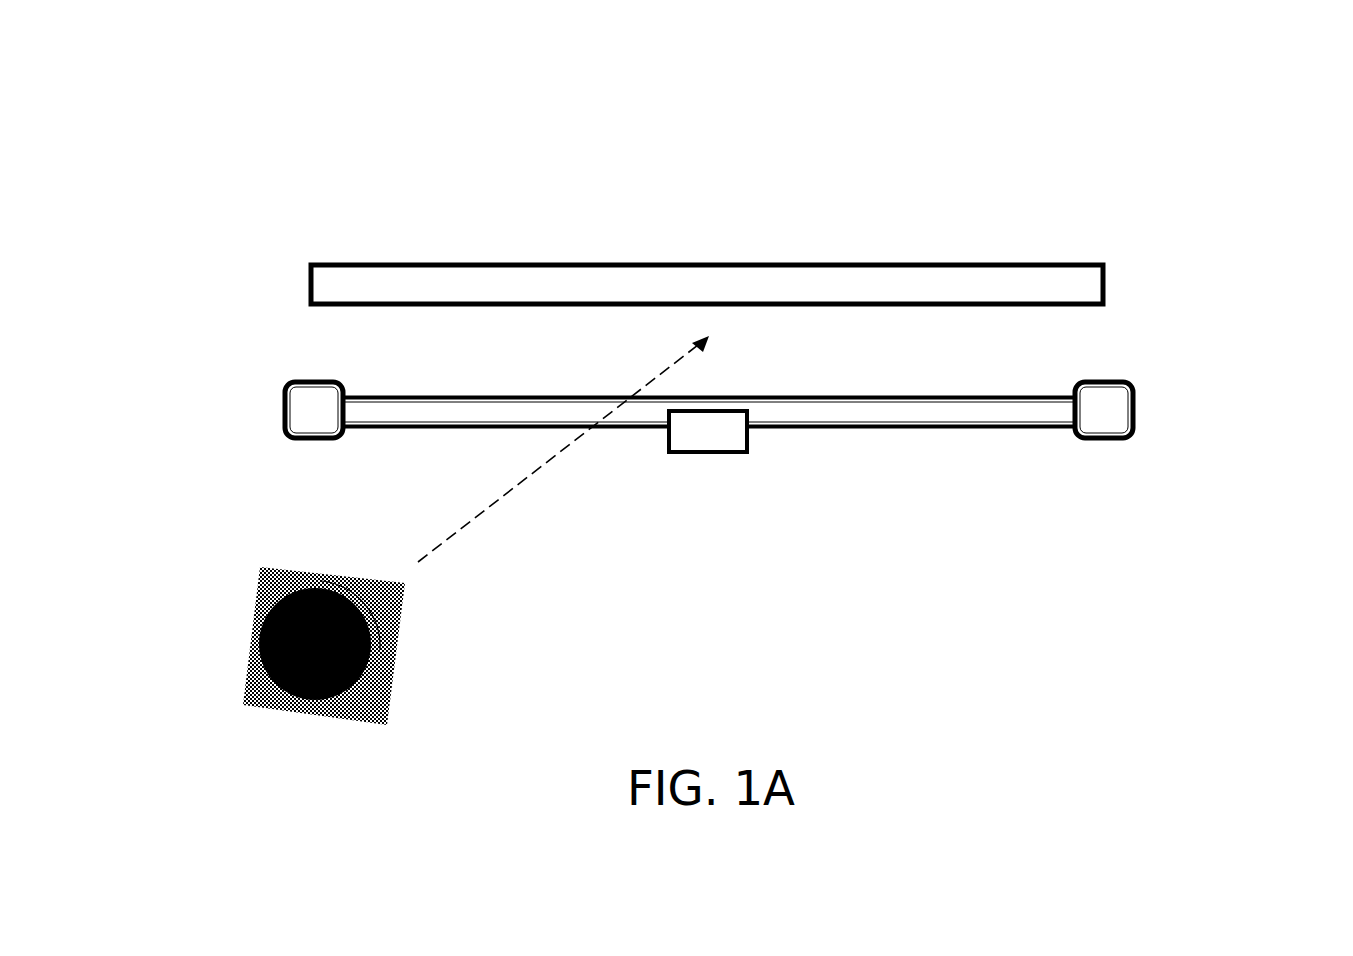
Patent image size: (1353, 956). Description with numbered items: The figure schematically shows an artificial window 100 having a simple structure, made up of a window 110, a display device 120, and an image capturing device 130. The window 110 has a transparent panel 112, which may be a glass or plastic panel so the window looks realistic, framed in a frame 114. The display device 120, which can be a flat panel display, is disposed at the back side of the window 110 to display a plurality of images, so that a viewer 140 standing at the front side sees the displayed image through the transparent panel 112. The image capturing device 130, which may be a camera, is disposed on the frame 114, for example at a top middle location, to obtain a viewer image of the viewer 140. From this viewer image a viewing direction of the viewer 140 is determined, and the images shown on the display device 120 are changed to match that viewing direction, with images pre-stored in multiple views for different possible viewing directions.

The artificial window 100 is at (230, 89).
The window 110 is at (760, 471).
The transparent panel 112 is at (895, 430).
The frame 114 is at (1123, 440).
The display device 120 is at (1045, 264).
The image capturing device 130 is at (707, 453).
The viewer 140 is at (280, 597).